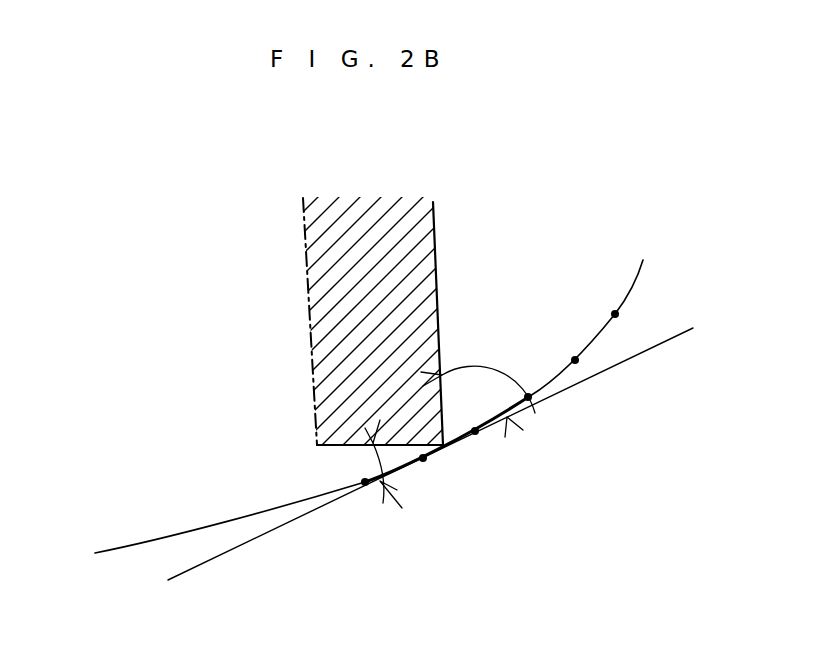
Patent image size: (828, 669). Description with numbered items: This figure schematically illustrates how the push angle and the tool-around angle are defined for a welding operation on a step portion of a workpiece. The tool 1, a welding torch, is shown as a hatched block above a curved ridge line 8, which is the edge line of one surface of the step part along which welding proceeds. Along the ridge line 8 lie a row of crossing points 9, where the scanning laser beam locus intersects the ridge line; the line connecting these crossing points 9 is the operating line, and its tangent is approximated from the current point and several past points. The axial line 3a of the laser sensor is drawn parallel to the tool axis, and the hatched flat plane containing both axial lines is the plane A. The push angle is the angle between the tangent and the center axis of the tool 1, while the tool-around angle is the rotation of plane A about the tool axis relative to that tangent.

The tool 1 is at (433, 232).
The axial line of the laser sensor 3a is at (300, 248).
The ridge line 8 is at (635, 285).
The crossing points 9 is at (535, 405).